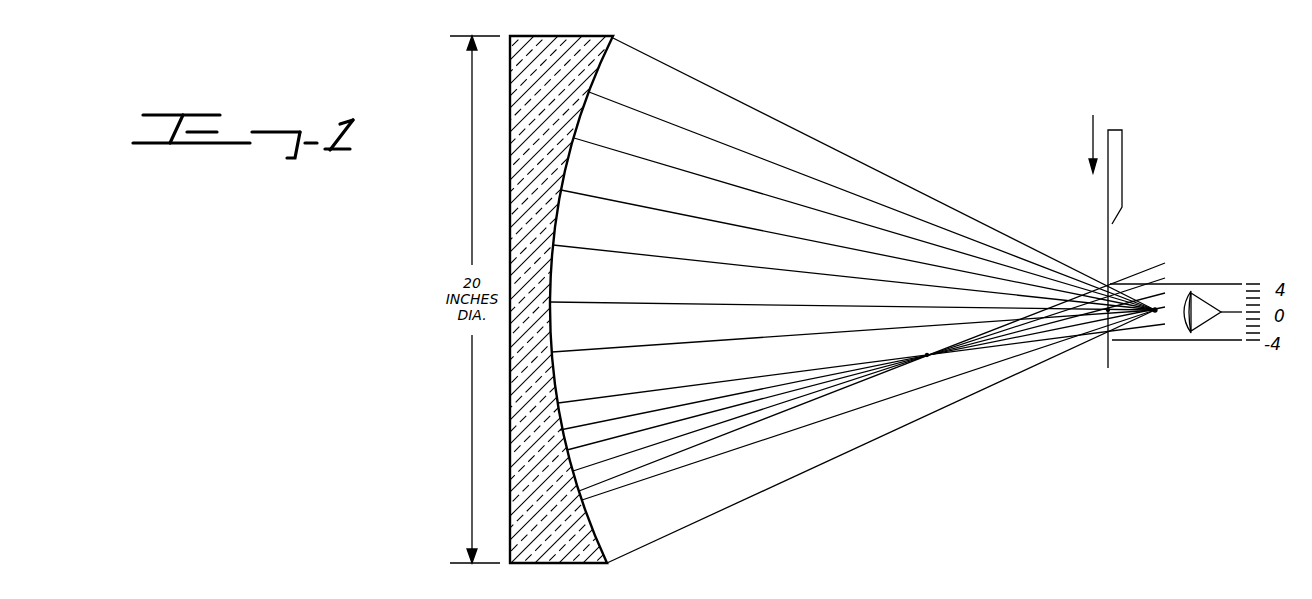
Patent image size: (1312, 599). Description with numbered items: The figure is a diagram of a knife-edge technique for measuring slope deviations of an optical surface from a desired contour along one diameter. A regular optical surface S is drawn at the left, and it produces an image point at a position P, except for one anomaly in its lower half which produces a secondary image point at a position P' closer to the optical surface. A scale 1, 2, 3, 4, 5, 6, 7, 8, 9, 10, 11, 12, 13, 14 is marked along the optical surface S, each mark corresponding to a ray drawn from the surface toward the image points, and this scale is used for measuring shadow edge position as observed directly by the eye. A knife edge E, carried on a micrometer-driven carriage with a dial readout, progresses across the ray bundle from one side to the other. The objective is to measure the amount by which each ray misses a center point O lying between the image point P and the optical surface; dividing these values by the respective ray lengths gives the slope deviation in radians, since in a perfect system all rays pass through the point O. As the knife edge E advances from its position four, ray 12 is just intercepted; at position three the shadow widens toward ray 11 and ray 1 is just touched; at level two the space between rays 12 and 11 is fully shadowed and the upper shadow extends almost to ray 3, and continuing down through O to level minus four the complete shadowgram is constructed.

The optical surface S is at (597, 79).
The ray 1 of scale 1 is at (880, 174).
The ray 2 of scale 2 is at (872, 201).
The ray 3 of scale 3 is at (863, 224).
The ray 4 of scale 4 is at (858, 250).
The ray 5 of scale 5 is at (854, 277).
The ray 6 of scale 6 is at (852, 313).
The ray 7 of scale 7 is at (853, 342).
The ray 8 of scale 8 is at (861, 363).
The ray 9 of scale 9 is at (862, 368).
The ray 10 of scale 10 is at (866, 372).
The ray 11 of scale 11 is at (869, 375).
The ray 12 of scale 12 is at (872, 378).
The ray 13 of scale 13 is at (868, 415).
The ray 14 of scale 14 is at (881, 442).
The image point P is at (1168, 281).
The secondary image point P' is at (957, 386).
The center point O is at (1110, 308).
The knife edge E is at (1113, 224).